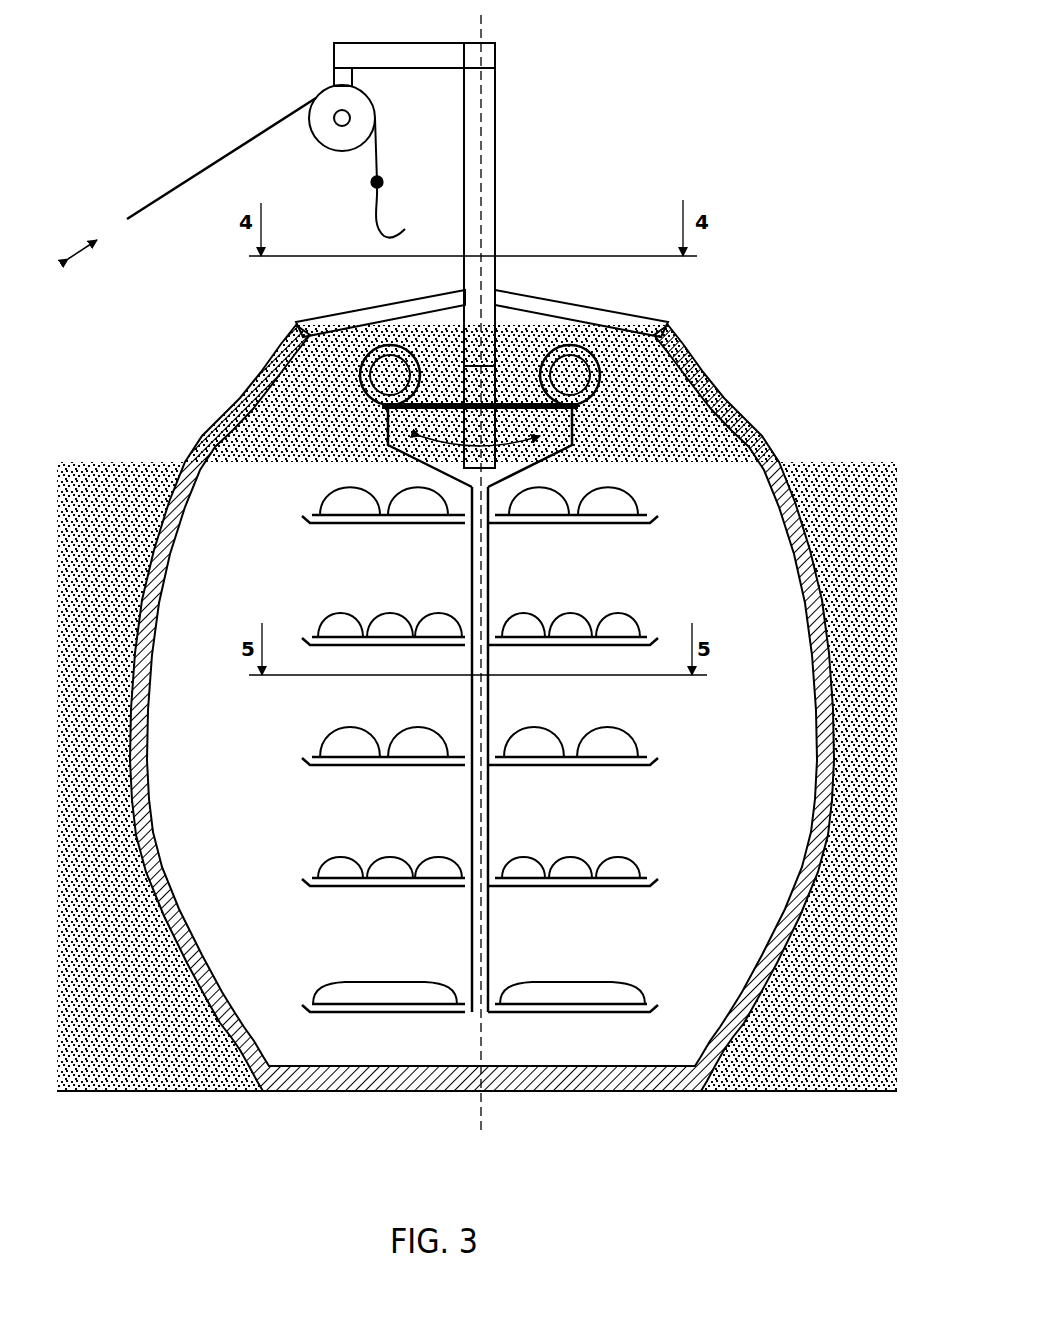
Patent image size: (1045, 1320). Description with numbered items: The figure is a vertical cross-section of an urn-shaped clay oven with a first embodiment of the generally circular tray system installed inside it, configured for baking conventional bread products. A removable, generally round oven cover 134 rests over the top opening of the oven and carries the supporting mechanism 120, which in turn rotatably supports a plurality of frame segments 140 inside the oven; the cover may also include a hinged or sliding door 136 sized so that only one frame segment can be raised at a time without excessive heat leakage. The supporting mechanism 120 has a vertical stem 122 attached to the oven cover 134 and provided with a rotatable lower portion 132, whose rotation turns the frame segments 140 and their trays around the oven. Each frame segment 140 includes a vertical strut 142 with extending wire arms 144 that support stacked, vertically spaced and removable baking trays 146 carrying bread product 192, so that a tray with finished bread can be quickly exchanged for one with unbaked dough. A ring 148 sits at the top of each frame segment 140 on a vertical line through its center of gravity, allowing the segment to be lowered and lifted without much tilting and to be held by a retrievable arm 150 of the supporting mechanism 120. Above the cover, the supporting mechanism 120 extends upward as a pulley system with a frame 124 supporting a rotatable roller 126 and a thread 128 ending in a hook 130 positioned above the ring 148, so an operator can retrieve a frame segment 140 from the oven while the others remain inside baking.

The supporting mechanism 120 is at (359, 247).
The vertical stem 122 is at (497, 207).
The frame 124 is at (334, 68).
The rotatable roller 126 is at (318, 96).
The thread 128 is at (168, 188).
The hook 130 is at (377, 220).
The rotatable lower portion 132 is at (498, 368).
The oven cover 134 is at (645, 308).
The door 136 is at (293, 322).
The frame segment 140 is at (464, 699).
The vertical strut 142 is at (472, 818).
The wire arms 144 is at (375, 890).
The baking tray 146 is at (312, 876).
The ring 148 is at (378, 345).
The retrievable arm 150 is at (448, 403).
The bread product 192 is at (598, 982).